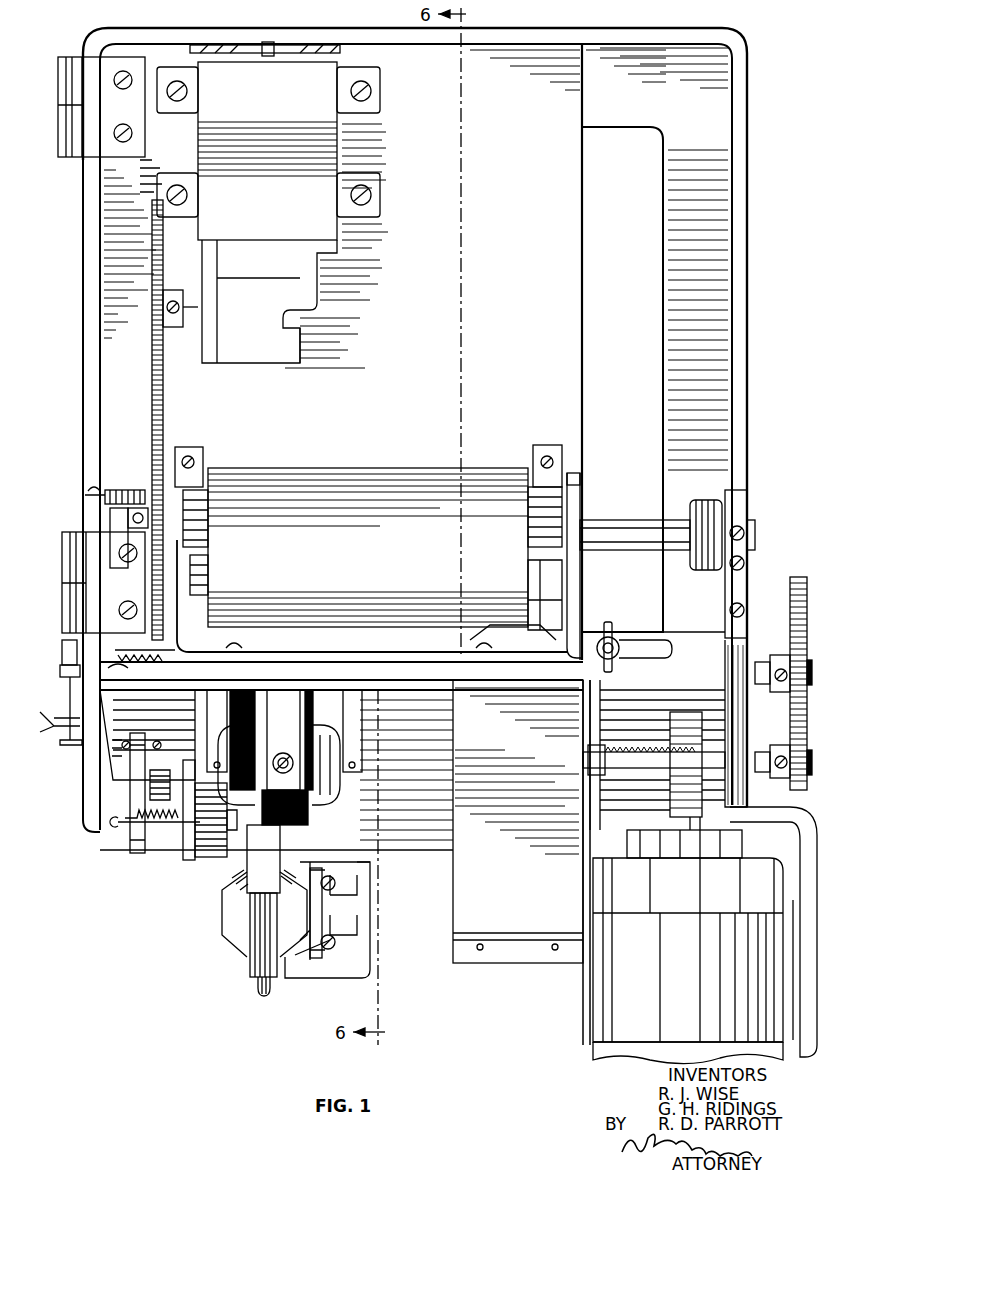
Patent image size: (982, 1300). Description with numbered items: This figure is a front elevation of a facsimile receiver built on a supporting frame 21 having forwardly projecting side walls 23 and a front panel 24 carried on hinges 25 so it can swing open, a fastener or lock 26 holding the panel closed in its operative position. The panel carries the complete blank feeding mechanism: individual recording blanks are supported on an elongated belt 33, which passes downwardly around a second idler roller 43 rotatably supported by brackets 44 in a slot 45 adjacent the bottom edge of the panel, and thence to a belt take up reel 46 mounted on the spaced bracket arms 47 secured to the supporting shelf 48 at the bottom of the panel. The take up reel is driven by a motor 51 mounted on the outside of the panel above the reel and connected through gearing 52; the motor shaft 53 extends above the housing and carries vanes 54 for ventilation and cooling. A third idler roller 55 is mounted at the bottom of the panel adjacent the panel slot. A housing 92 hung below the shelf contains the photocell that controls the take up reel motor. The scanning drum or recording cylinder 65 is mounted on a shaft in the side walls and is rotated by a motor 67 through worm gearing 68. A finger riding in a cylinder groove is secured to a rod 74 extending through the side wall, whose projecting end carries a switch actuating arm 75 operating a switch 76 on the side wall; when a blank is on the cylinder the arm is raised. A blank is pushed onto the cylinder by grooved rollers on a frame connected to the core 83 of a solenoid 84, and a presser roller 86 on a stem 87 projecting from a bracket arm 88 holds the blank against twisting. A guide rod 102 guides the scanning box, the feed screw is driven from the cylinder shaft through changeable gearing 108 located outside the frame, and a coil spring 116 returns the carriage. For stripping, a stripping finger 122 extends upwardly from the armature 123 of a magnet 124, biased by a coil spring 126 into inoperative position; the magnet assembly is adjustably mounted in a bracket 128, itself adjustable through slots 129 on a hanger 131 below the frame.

The supporting frame 21 is at (573, 30).
The side walls 23 is at (86, 278).
The front panel 24 is at (572, 296).
The hinges 25 is at (133, 124).
The fastener or lock 26 is at (604, 640).
The belt 33 is at (370, 470).
The second idler roller 43 is at (206, 600).
The brackets 44 is at (190, 452).
The slot 45 is at (478, 632).
The belt take up reel 46 is at (535, 500).
The bracket arms 47 is at (195, 543).
The supporting shelf 48 is at (412, 682).
The motor 51 is at (318, 152).
The gearing 52 is at (163, 418).
The motor shaft 53 is at (268, 42).
The vanes 54 is at (308, 54).
The third idler roller 55 is at (226, 646).
The scanning drum or recording cylinder 65 is at (424, 838).
The motor 67 is at (597, 997).
The worm gearing 68 is at (662, 744).
The rod 74 is at (128, 668).
The switch actuating arm 75 is at (48, 668).
The switch 76 is at (52, 728).
The core 83 is at (297, 753).
The solenoid 84 is at (322, 788).
The presser roller 86 is at (210, 852).
The stem 87 is at (170, 838).
The bracket arm 88 is at (134, 852).
The housing 92 is at (522, 806).
The guide rod 102 is at (622, 528).
The gearing 108 is at (790, 712).
The coil spring 116 is at (130, 488).
The stripping finger 122 is at (277, 791).
The armature 123 is at (255, 968).
The magnet 124 is at (228, 930).
The coil spring 126 is at (268, 992).
The bracket 128 is at (358, 913).
The slots 129 is at (345, 890).
The hanger 131 is at (335, 975).